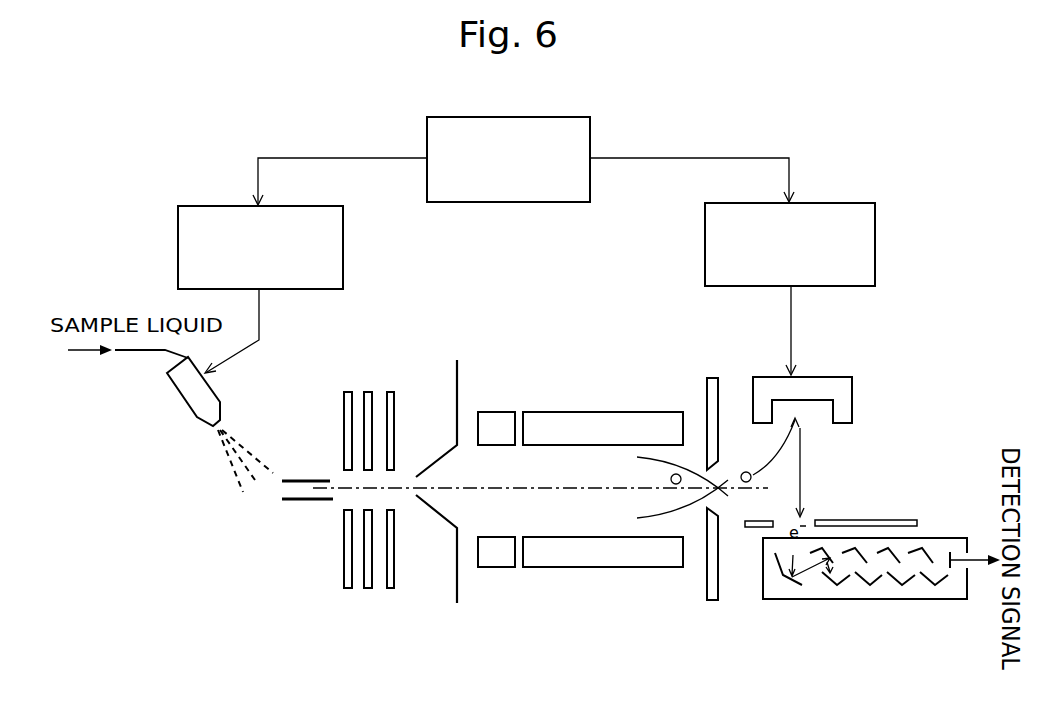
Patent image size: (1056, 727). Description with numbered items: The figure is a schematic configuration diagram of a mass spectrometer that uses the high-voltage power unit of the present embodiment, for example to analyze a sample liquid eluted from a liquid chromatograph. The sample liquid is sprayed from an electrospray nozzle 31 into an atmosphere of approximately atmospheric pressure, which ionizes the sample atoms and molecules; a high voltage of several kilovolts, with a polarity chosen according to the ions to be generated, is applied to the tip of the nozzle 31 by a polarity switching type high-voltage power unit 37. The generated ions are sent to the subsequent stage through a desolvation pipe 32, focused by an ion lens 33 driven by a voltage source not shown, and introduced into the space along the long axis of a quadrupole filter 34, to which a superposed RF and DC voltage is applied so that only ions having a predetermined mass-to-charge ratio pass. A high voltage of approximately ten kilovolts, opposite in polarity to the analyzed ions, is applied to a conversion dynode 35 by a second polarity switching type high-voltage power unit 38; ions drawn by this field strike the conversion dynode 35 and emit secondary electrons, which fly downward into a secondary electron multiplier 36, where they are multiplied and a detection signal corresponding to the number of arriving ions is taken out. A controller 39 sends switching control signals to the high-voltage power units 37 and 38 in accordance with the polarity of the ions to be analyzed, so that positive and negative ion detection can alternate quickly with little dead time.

The nozzle 31 is at (183, 400).
The desolvation pipe 32 is at (287, 503).
The ion lens 33 is at (398, 383).
The quadrupole filter 34 is at (537, 388).
The conversion dynode 35 is at (822, 375).
The secondary electron multiplier 36 is at (863, 602).
The high-voltage power unit 37 is at (178, 237).
The high-voltage power unit 38 is at (705, 233).
The controller 39 is at (590, 130).